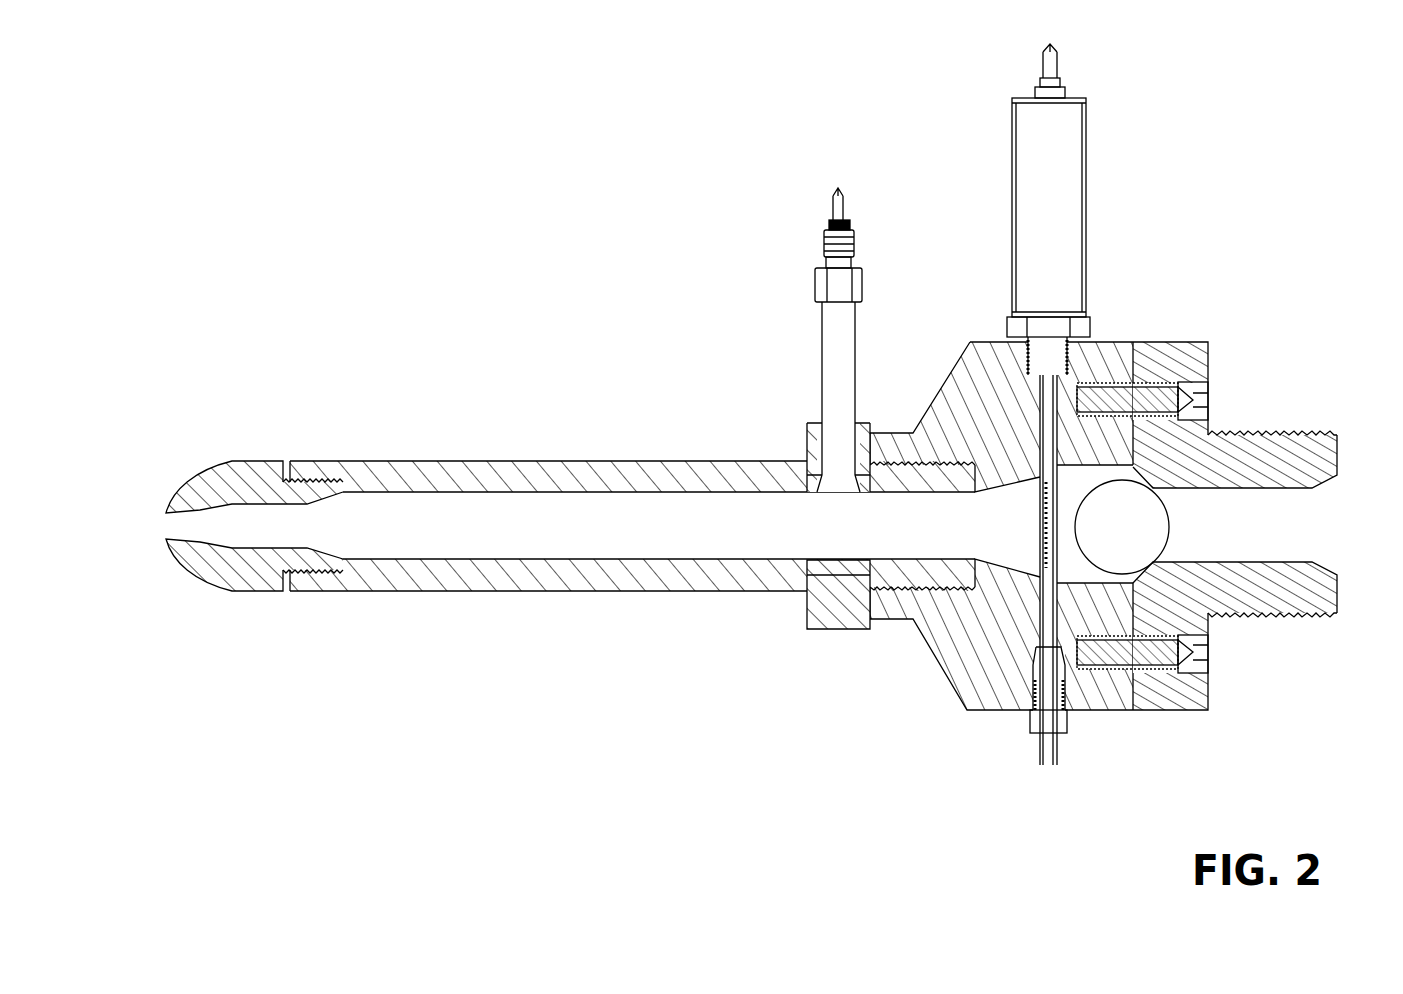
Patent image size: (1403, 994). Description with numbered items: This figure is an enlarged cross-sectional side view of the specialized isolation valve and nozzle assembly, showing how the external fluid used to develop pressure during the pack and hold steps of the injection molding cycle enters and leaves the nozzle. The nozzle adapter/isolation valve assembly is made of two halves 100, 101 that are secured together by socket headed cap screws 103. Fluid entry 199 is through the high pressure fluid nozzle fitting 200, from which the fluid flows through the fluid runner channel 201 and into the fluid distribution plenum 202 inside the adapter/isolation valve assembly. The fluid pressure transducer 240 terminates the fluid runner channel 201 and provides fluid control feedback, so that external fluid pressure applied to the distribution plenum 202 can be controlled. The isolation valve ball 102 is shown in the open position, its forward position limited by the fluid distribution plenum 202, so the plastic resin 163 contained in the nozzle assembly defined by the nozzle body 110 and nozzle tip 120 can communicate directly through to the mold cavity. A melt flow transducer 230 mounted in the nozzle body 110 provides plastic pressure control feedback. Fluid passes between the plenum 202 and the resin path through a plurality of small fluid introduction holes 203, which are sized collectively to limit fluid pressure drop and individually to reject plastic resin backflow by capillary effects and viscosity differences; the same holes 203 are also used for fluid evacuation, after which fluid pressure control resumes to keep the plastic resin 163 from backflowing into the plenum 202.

The nozzle adapter/isolation valve assembly half 100 is at (968, 380).
The nozzle adapter/isolation valve assembly half 101 is at (1168, 348).
The isolation valve ball 102 is at (1146, 523).
The socket headed cap screws 103 is at (1153, 388).
The nozzle body 110 is at (473, 470).
The nozzle tip 120 is at (224, 490).
The plastic resin 163 is at (442, 541).
The fluid entry 199 is at (1047, 767).
The high pressure fluid nozzle fitting 200 is at (1067, 712).
The fluid runner channel 201 is at (1047, 630).
The fluid distribution plenum 202 is at (1047, 435).
The fluid introduction holes 203 is at (1043, 568).
The melt flow transducer 230 is at (838, 330).
The fluid pressure transducer 240 is at (1032, 131).